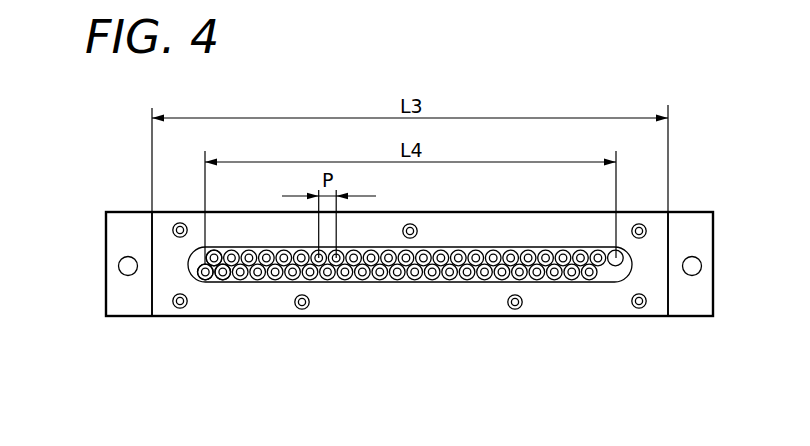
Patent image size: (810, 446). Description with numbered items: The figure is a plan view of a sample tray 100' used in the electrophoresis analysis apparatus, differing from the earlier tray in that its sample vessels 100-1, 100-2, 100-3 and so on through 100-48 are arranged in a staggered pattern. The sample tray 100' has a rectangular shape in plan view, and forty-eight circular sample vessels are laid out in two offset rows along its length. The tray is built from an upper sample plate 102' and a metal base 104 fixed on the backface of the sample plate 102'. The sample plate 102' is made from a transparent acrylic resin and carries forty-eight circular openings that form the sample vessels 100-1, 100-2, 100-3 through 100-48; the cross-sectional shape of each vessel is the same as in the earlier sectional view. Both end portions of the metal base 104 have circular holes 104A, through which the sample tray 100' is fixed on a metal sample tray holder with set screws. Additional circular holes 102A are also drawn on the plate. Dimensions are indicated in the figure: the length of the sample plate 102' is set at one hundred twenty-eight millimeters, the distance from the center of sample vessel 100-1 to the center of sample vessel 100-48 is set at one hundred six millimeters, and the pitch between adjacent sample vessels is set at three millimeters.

The sample tray 100' is at (411, 304).
The sample vessel 100-1 is at (205, 280).
The sample vessel 100-2 is at (213, 256).
The sample vessel 100-3 is at (224, 280).
The sample vessel 100-48 is at (624, 257).
The sample plate 102' is at (409, 289).
The mounting holes of housing 102A is at (304, 310).
The metal base 104 is at (125, 318).
The circular holes 104A is at (118, 266).